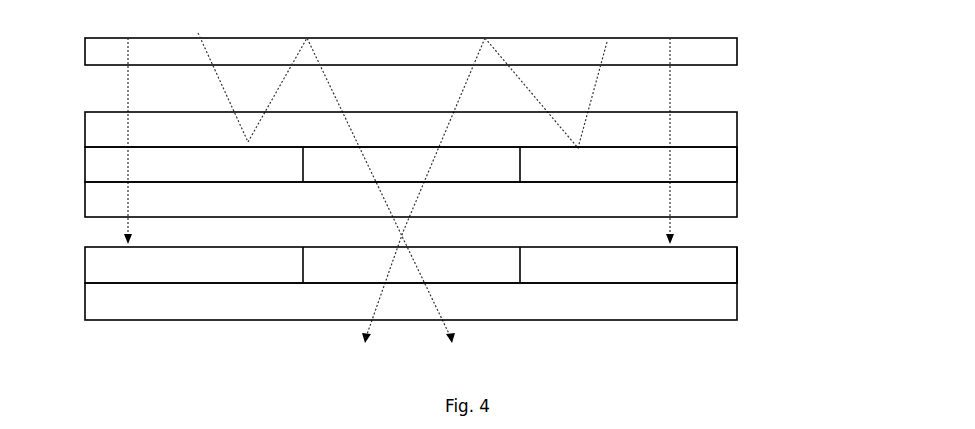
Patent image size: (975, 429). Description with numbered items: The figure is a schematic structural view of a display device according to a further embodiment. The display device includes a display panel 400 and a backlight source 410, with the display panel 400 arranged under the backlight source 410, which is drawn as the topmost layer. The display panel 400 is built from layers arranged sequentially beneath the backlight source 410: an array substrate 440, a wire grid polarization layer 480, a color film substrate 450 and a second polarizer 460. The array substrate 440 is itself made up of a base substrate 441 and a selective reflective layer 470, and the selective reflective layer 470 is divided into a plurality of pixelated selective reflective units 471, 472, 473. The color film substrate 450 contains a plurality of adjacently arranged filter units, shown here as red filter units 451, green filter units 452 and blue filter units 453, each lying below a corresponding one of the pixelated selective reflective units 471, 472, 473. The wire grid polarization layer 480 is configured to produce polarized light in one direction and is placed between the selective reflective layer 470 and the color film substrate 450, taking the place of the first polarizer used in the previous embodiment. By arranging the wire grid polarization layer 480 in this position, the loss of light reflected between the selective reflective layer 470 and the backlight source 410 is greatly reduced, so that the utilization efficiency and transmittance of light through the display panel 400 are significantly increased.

The display panel 400 is at (470, 207).
The backlight source 410 is at (730, 50).
The array substrate 440 is at (427, 138).
The base substrate 441 is at (730, 130).
The color film substrate 450 is at (463, 263).
The red filter unit 451 is at (246, 266).
The green filter unit 452 is at (449, 266).
The blue filter unit 453 is at (670, 266).
The second polarizer 460 is at (463, 301).
The selective reflective layer 470 is at (463, 159).
The pixelated selective reflective unit 471 is at (246, 164).
The pixelated selective reflective unit 472 is at (449, 164).
The pixelated selective reflective unit 473 is at (670, 164).
The wire grid polarization layer 480 is at (730, 200).